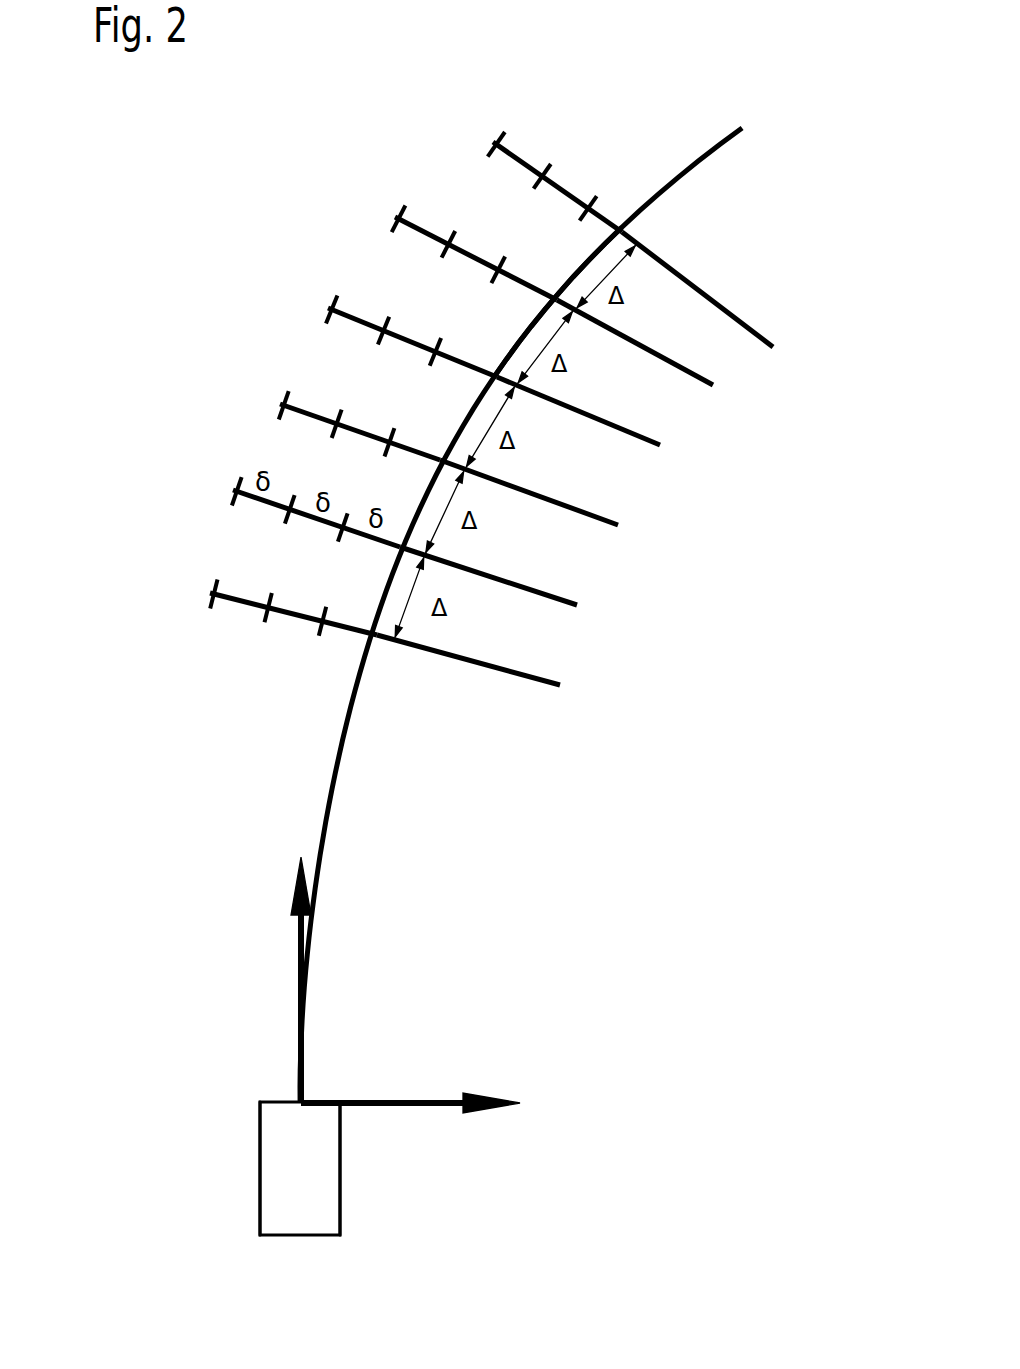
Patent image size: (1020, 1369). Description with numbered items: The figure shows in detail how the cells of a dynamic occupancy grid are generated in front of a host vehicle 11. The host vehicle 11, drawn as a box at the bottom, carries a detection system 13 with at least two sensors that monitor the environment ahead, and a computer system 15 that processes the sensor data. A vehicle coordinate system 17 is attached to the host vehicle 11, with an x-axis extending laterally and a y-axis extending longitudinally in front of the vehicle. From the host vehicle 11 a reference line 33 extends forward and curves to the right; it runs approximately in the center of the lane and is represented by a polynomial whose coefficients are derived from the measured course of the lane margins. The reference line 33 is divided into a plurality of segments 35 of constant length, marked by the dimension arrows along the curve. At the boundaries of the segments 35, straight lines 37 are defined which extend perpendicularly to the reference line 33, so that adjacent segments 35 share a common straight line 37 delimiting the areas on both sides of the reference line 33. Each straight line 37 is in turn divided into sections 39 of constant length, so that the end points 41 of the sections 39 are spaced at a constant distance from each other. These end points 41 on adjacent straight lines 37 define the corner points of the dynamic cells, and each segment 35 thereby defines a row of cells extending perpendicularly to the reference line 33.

The host vehicle 11 is at (325, 1212).
The detection system 13 is at (275, 1132).
The computer system 15 is at (327, 1135).
The vehicle coordinate system 17 is at (442, 1053).
The reference line 33 is at (688, 170).
The segments 35 is at (578, 267).
The straight lines 37 is at (598, 524).
The sections 39 is at (318, 519).
The end points 41 is at (293, 497).